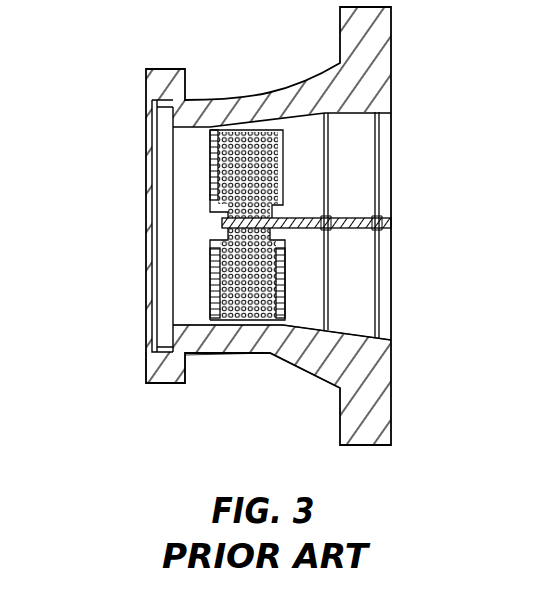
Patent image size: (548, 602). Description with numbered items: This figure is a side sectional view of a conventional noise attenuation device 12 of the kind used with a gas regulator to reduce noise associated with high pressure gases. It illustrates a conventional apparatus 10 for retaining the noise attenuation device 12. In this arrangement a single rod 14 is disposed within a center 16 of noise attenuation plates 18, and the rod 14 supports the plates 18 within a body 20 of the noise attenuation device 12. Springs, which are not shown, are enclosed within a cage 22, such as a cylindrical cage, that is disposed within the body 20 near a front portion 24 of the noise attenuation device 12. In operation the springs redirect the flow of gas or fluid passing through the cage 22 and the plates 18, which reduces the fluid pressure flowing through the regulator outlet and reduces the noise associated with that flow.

The apparatus 10 is at (364, 272).
The noise attenuation device 12 is at (104, 80).
The single rod 14 is at (360, 218).
The center 16 is at (325, 218).
The noise attenuation plates 18 is at (327, 157).
The body 20 is at (283, 352).
The cage 22 is at (210, 283).
The front portion 24 is at (168, 373).